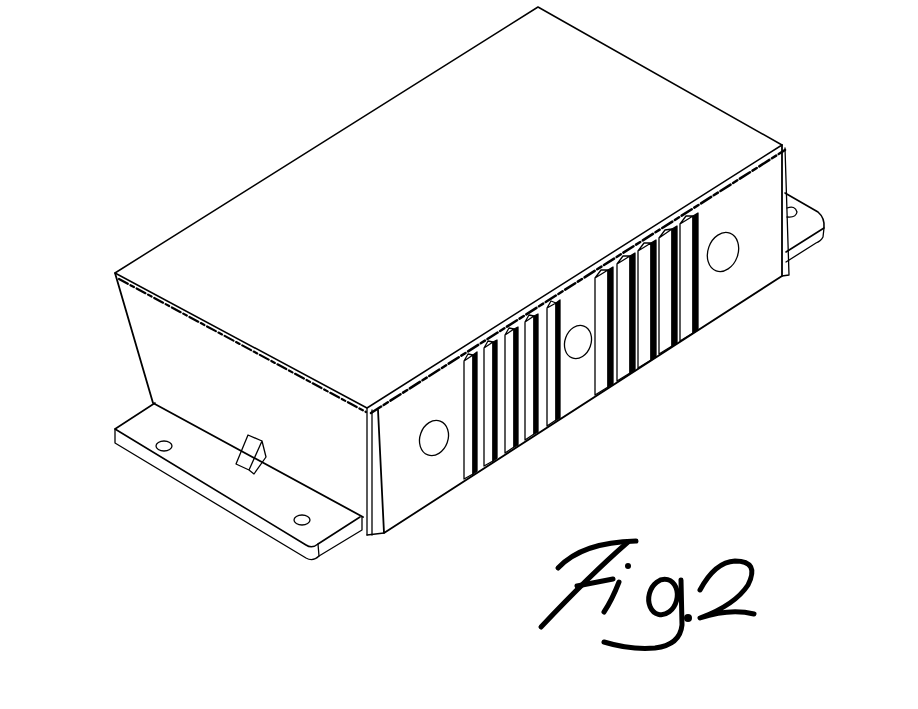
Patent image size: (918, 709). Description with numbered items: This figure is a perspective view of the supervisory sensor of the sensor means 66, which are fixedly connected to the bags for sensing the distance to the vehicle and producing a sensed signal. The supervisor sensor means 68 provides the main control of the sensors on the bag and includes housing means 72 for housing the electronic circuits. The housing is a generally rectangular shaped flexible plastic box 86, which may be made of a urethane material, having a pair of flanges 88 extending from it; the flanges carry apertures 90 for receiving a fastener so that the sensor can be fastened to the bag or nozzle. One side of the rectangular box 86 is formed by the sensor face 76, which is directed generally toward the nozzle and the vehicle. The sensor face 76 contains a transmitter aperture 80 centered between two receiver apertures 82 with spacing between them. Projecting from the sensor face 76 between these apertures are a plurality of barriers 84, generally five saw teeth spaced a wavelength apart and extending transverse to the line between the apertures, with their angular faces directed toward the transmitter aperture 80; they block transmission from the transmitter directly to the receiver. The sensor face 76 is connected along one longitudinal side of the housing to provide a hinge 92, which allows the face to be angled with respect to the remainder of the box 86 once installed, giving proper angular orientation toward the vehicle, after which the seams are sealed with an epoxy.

The sensor means 66 is at (306, 148).
The supervisor sensor means 68 is at (645, 116).
The housing means 72 is at (362, 537).
The sensor face 76 is at (772, 275).
The transmitter aperture 80 is at (581, 359).
The receiver apertures 82 is at (437, 455).
The barriers 84 is at (533, 437).
The flexible plastic box 86 is at (145, 374).
The flanges 88 is at (245, 520).
The apertures 90 is at (161, 452).
The hinge 92 is at (410, 386).